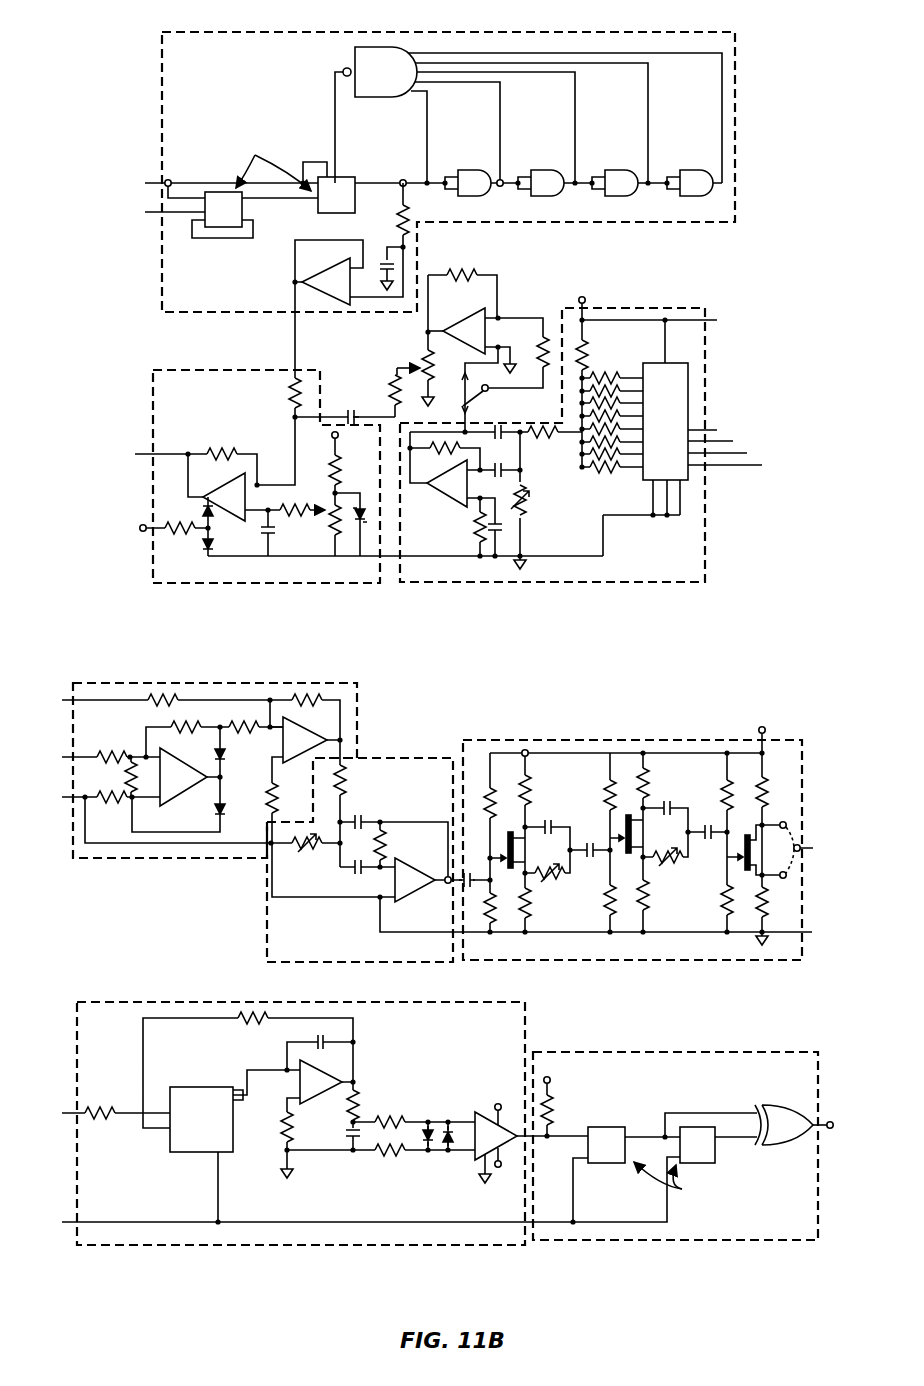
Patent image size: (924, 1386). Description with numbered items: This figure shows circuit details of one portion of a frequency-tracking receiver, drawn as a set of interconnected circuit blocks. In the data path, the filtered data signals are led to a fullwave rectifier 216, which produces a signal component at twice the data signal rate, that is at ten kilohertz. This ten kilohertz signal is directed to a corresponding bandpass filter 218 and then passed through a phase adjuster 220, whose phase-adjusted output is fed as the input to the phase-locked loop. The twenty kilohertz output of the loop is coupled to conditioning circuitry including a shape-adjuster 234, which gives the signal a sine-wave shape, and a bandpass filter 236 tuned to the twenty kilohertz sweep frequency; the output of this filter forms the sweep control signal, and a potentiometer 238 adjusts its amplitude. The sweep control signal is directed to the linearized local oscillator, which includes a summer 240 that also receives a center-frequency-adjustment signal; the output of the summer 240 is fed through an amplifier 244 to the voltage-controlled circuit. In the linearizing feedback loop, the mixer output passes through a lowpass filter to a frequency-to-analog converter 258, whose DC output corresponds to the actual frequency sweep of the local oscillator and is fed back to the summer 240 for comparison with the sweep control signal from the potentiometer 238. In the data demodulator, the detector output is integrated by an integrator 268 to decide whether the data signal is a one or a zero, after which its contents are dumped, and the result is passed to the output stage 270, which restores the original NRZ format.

The frequency-to-analog converter 258 is at (160, 85).
The potentiometer 238 is at (423, 362).
The summer 240 is at (244, 476).
The amplifier 244 is at (153, 432).
The shape-adjuster 234 is at (493, 439).
The bandpass filter 236 is at (440, 551).
The fullwave rectifier 216 is at (240, 679).
The bandpass filter 218 is at (262, 898).
The phase adjuster 220 is at (590, 738).
The integrator 268 is at (300, 1246).
The output stage 270 is at (683, 1241).